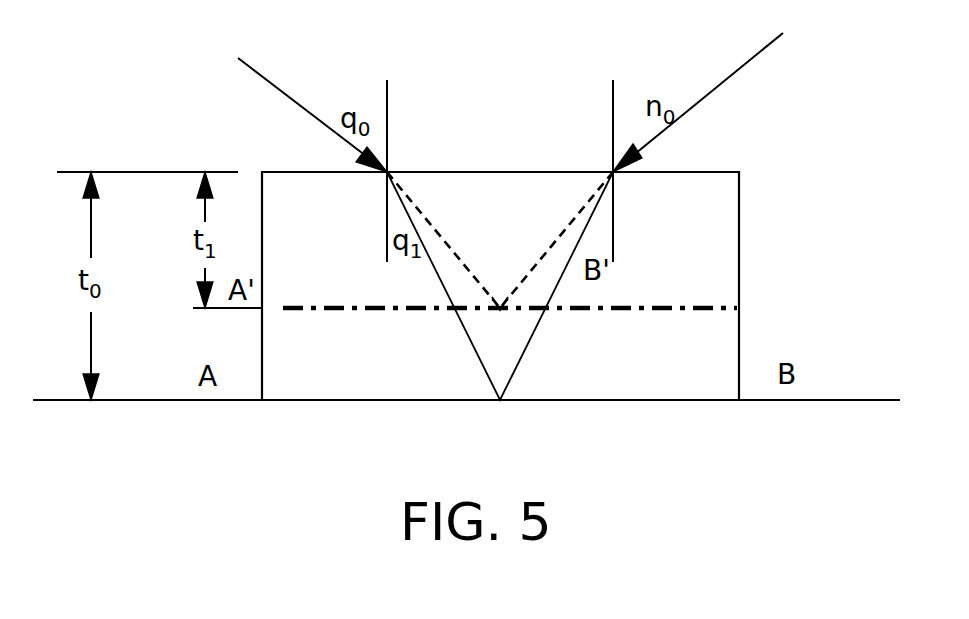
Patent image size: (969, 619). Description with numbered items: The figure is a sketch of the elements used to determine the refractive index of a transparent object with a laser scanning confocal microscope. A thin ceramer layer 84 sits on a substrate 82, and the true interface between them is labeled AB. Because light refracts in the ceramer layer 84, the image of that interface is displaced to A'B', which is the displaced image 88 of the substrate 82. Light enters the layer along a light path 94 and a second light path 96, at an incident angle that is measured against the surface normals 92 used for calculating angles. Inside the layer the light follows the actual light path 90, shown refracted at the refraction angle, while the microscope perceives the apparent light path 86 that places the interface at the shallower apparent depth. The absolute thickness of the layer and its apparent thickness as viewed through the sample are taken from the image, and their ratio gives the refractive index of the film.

The substrate 82 is at (818, 400).
The ceramer layer 84 is at (739, 254).
The apparent light path 86 is at (463, 263).
The displaced image of the substrate 88 is at (642, 308).
The actual light path 90 is at (530, 347).
The surface normals 92 is at (613, 112).
The light path 94 is at (729, 80).
The second light path 96 is at (273, 86).